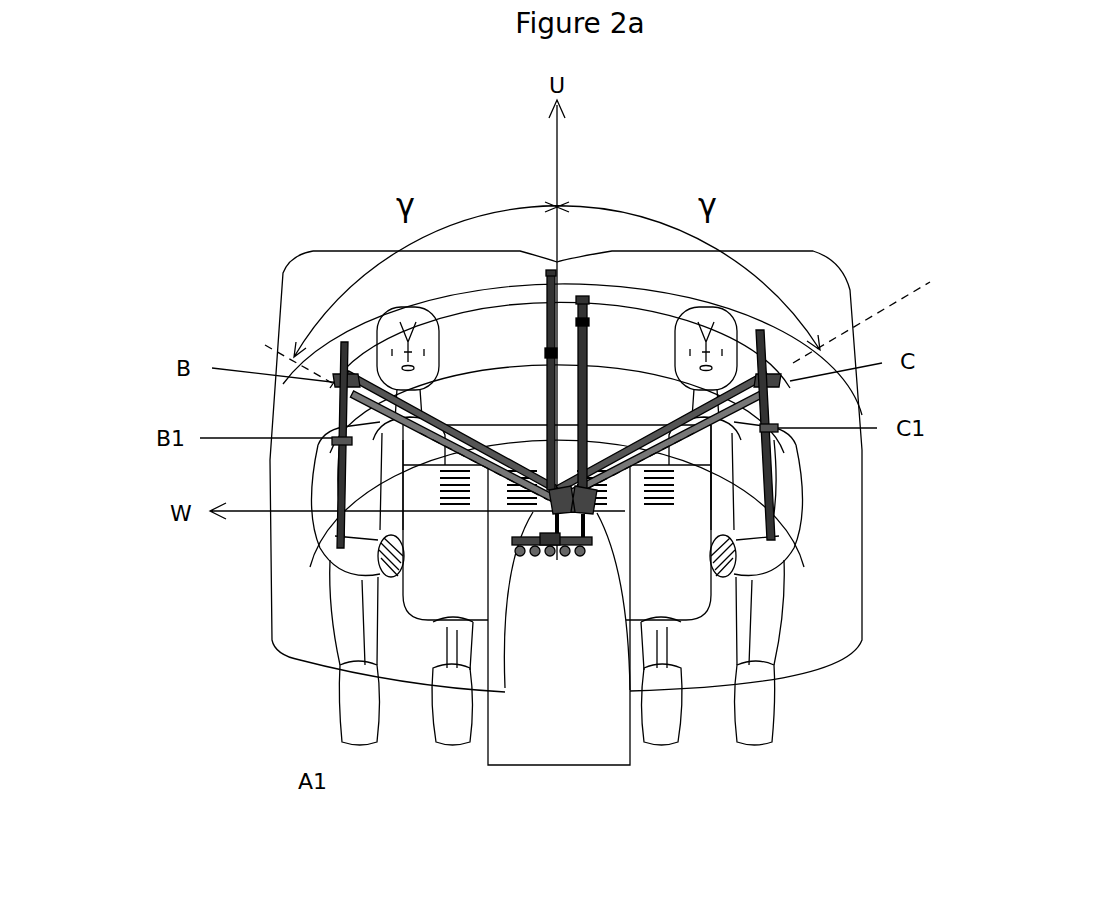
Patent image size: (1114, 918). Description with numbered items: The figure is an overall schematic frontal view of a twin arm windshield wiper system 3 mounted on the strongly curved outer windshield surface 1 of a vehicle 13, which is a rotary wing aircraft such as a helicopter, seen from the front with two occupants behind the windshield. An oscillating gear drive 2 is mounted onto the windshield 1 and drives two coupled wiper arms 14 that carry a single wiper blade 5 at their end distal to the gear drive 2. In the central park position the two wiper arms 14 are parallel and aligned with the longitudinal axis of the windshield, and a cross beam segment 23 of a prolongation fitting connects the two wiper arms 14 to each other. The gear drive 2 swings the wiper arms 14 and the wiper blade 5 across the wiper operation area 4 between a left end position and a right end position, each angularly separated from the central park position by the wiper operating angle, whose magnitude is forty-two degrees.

The windshield surface 1 is at (828, 618).
The oscillating gear drive 2 is at (540, 560).
The twin arm windshield wiper system 3 is at (918, 222).
The wiper operation area 4 is at (410, 370).
The wiper blade 5 is at (772, 487).
The vehicle 13 is at (557, 689).
The wiper arms 14 is at (600, 447).
The cross beam segment 23 is at (330, 757).